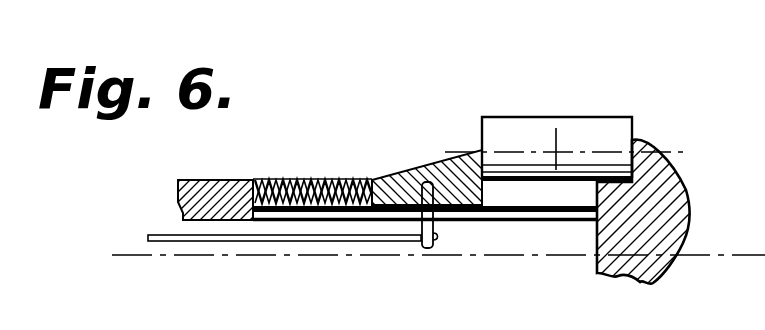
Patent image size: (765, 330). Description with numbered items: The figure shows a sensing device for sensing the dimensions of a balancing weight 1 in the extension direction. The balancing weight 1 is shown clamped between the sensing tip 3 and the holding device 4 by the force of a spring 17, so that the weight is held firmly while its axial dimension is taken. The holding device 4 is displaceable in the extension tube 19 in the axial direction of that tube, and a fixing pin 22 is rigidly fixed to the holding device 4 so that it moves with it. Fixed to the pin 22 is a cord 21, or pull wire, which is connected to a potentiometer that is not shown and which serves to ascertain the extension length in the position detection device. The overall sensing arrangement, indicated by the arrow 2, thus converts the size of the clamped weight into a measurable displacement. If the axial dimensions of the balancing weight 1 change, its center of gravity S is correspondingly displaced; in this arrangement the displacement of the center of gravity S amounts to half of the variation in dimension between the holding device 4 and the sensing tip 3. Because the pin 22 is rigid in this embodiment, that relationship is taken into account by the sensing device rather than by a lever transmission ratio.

The balancing weight 1 is at (508, 132).
The center of gravity S is at (567, 145).
The valve assembly 2 is at (366, 157).
The sensing tip 3 is at (687, 160).
The holding device 4 is at (428, 165).
The spring 17 is at (290, 180).
The extension tube 19 is at (223, 178).
The cord 21 is at (287, 242).
The fixing pin 22 is at (433, 225).